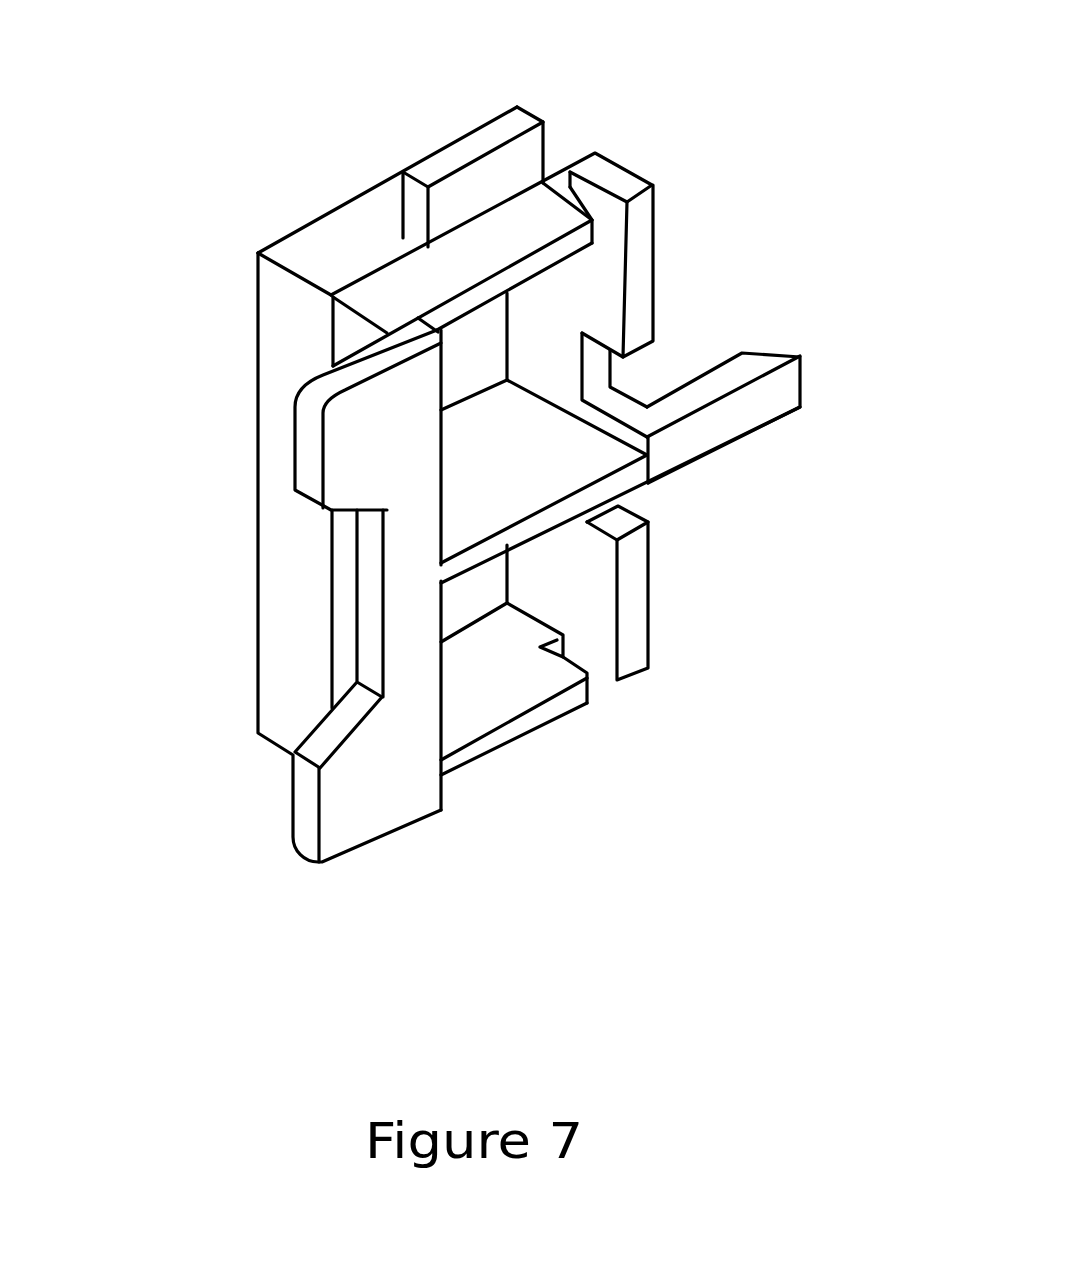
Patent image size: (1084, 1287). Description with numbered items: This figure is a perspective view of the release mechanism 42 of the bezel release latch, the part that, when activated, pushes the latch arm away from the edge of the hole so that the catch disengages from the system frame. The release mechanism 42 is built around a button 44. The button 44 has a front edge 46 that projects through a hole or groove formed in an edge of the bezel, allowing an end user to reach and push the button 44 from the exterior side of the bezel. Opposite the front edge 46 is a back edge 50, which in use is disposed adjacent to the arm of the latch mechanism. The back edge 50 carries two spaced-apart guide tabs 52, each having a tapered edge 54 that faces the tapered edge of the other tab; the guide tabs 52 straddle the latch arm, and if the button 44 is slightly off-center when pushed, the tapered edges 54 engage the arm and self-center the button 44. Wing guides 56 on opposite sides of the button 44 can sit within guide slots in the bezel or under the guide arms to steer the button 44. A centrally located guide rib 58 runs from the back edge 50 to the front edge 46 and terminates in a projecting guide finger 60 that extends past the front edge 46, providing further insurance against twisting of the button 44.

The release mechanism 42 is at (772, 262).
The button 44 is at (328, 245).
The front edge 46 is at (587, 146).
The back edge 50 is at (290, 588).
The guide tabs 52 is at (352, 410).
The tapered edge 54 is at (348, 724).
The wing guides 56 is at (473, 188).
The guide rib 58 is at (510, 489).
The projecting guide finger 60 is at (747, 417).